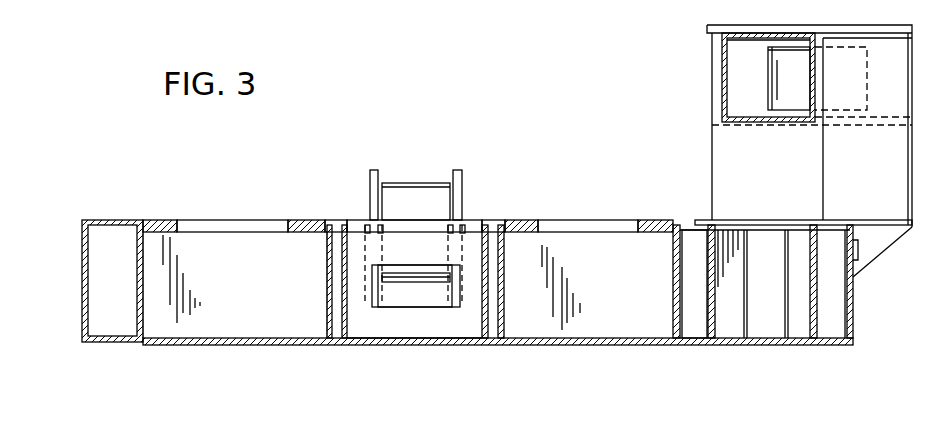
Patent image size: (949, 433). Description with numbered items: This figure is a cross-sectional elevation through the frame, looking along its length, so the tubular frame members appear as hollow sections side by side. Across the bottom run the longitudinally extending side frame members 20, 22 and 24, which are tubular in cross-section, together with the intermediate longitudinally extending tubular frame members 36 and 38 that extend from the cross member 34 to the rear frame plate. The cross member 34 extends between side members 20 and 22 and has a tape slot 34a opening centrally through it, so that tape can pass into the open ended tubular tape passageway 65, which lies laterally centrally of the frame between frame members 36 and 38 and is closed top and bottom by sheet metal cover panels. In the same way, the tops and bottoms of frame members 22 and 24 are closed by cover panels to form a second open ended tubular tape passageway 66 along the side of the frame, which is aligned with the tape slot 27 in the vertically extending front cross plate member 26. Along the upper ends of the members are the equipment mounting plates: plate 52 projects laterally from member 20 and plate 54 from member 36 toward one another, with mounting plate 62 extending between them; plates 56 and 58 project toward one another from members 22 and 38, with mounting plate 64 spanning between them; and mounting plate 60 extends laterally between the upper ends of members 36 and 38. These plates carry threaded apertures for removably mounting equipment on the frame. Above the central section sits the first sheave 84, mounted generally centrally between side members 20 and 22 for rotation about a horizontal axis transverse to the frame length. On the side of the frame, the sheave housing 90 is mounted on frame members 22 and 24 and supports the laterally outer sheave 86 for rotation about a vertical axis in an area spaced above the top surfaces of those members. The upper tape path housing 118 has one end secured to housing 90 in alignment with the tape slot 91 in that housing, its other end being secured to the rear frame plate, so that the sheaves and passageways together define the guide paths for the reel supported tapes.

The side frame member 20 is at (82, 313).
The side frame member 22 is at (717, 323).
The side frame member 24 is at (852, 317).
The cross plate member 26 is at (733, 322).
The tape slot 27 is at (747, 315).
The cross member 34 is at (268, 255).
The tape slot 34a is at (427, 302).
The tubular frame member 36 is at (325, 315).
The tubular frame member 38 is at (503, 320).
The equipment mounting plate 52 is at (162, 222).
The equipment mounting plate 54 is at (313, 222).
The mounting plate 56 is at (657, 222).
The mounting plate 58 is at (528, 223).
The mounting plate 60 is at (472, 222).
The mounting plate 62 is at (207, 222).
The mounting plate 64 is at (582, 228).
The tape passageway 65 is at (377, 325).
The tape passageway 66 is at (797, 323).
The first sheave 84 is at (427, 198).
The laterally outer sheave 86 is at (782, 97).
The sheave housing 90 is at (693, 30).
The tape slot 91 is at (733, 48).
The upper tape path housing 118 is at (722, 80).